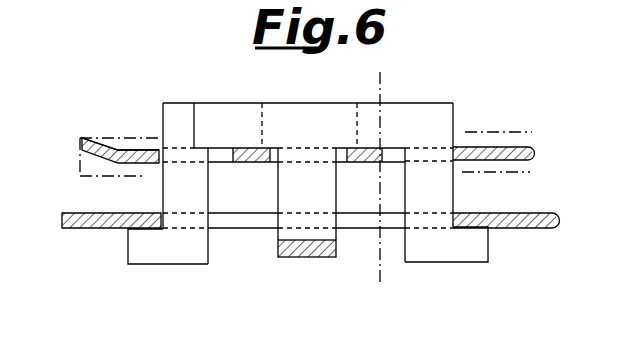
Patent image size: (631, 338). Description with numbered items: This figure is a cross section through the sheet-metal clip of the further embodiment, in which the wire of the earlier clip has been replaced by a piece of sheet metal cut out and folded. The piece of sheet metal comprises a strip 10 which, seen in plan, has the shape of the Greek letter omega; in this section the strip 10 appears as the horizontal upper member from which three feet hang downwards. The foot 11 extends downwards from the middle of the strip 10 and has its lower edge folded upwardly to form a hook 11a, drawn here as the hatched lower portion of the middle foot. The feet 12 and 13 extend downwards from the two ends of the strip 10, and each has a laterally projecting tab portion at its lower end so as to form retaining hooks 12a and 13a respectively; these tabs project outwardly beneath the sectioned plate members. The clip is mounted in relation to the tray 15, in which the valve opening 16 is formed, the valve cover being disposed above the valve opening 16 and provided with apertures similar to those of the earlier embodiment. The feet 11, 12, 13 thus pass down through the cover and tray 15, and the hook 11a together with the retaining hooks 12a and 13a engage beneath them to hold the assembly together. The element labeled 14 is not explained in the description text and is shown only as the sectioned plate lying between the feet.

The strip 10 is at (318, 113).
The foot 11 is at (318, 193).
The hook 11a is at (293, 257).
The foot 12 is at (127, 226).
The retaining hook 12a is at (147, 250).
The foot 13 is at (435, 202).
The retaining hook 13a is at (452, 245).
The lower plate 14 is at (78, 223).
The tray 15 is at (504, 145).
The valve opening 16 is at (237, 222).